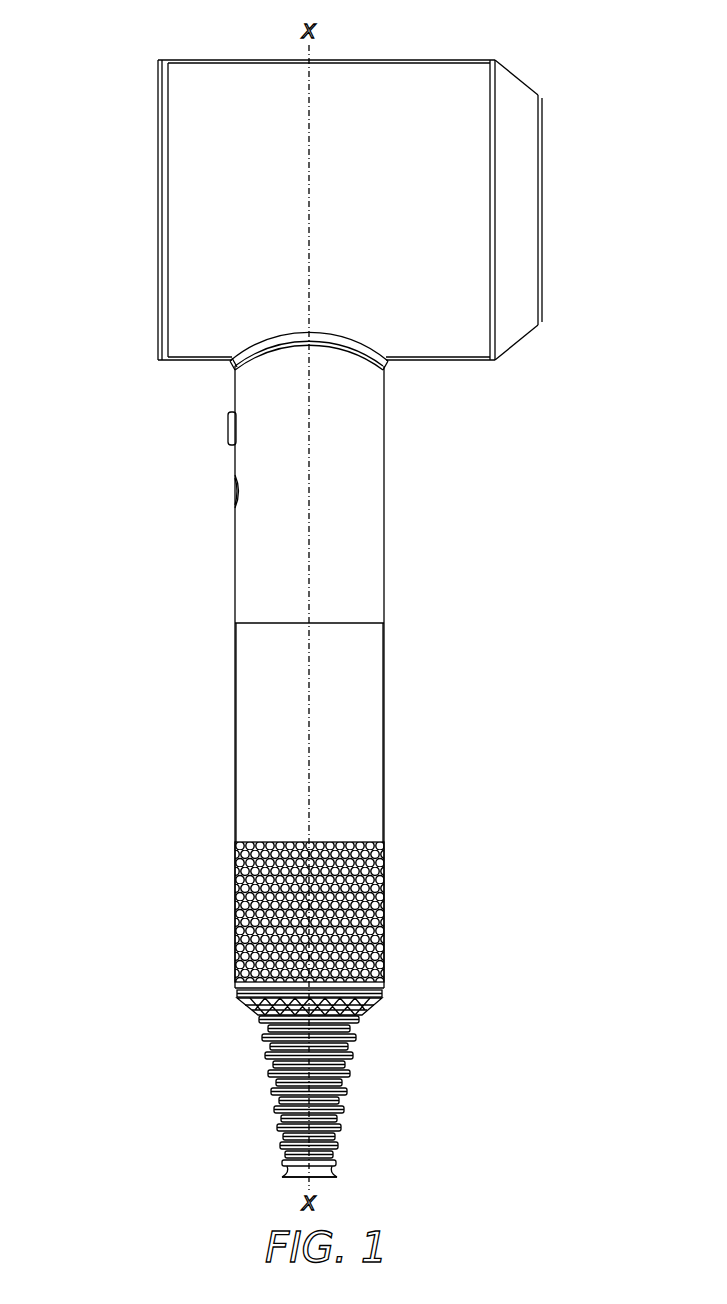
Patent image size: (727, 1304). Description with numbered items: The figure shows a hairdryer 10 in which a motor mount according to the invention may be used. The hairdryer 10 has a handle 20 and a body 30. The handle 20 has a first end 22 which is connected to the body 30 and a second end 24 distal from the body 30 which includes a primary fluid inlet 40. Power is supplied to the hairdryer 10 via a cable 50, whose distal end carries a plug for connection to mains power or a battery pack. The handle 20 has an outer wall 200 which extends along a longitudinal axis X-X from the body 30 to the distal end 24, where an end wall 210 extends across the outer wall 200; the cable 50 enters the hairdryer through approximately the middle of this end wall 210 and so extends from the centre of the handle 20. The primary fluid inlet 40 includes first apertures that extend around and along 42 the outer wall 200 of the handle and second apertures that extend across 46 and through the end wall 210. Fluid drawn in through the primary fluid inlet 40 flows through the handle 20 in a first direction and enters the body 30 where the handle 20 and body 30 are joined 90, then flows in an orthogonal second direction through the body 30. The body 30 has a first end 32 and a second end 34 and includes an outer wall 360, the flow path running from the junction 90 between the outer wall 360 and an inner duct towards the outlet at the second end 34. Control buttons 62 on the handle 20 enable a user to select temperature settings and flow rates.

The hairdryer 10 is at (530, 622).
The body 30 is at (117, 89).
The first end of the body 32 is at (160, 60).
The second end of the body 34 is at (538, 95).
The outer wall of the body 360 is at (468, 102).
The first end of the handle 22 is at (386, 363).
The junction of the handle and the body 90 is at (232, 365).
The handle 20 is at (404, 543).
The control button 62 is at (228, 430).
The outer wall of the handle 200 is at (373, 735).
The primary fluid inlet 40 is at (409, 912).
The first apertures 42 is at (237, 945).
The second end of the handle 24 is at (401, 1018).
The end wall 210 is at (244, 998).
The second apertures 46 is at (366, 1006).
The cable 50 is at (345, 1091).